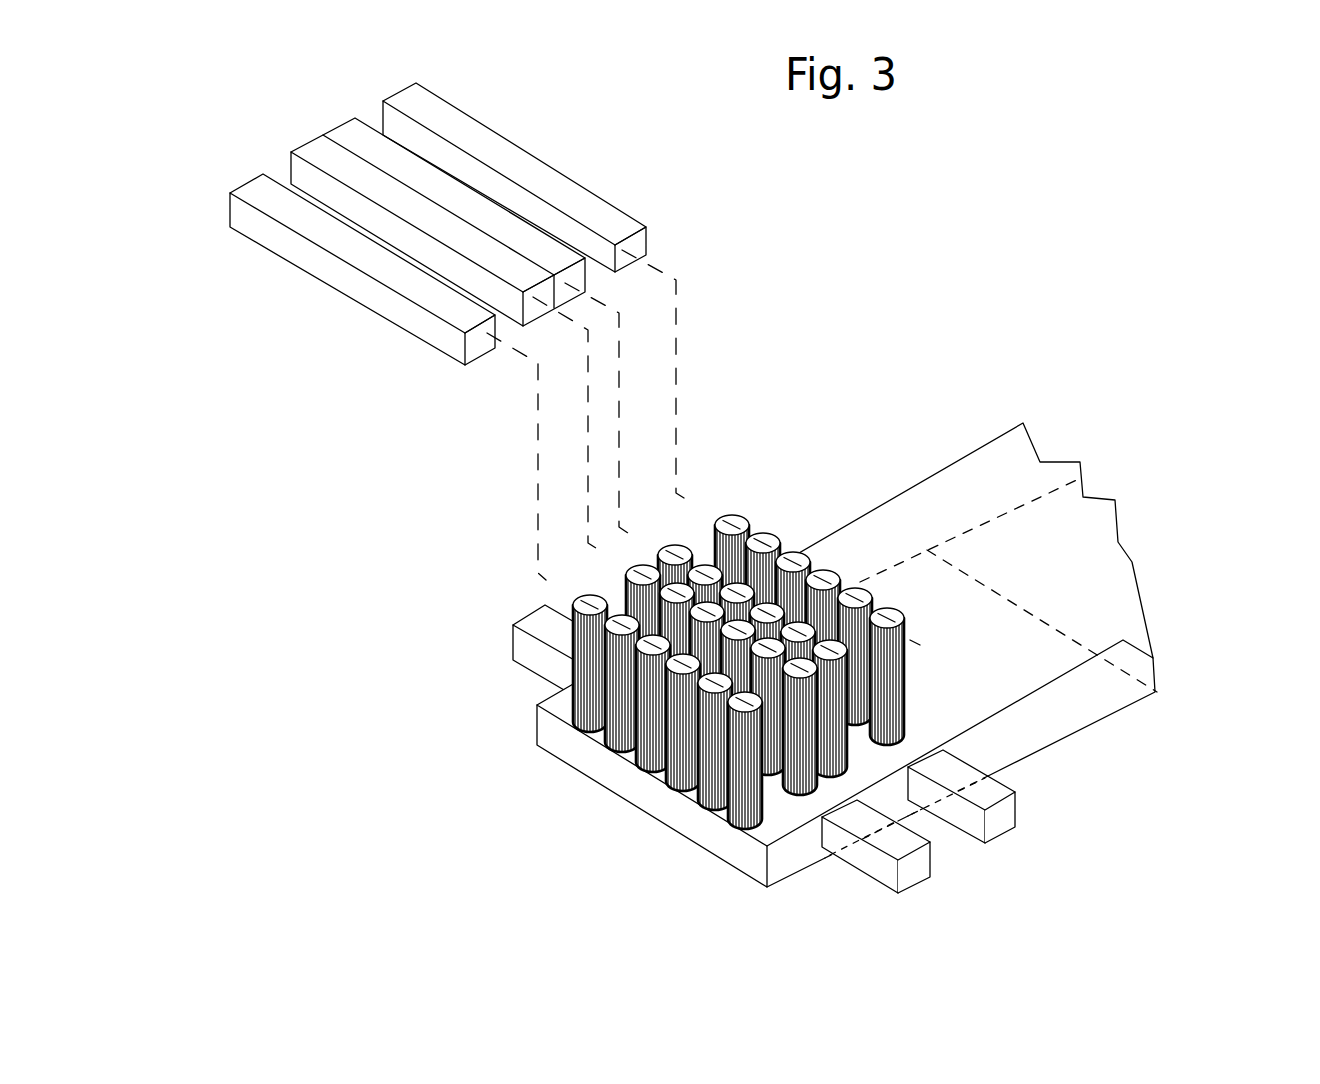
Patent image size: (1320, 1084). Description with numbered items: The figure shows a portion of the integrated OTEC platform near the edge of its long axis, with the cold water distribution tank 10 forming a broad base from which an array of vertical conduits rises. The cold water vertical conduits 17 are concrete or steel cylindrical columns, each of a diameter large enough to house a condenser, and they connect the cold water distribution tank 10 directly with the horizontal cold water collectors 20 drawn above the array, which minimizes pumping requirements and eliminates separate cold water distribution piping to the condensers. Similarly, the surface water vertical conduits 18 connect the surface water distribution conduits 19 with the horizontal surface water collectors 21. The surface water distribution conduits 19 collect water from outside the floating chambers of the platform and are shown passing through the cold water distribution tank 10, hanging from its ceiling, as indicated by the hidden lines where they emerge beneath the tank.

The cold water distribution tank 10 is at (1063, 557).
The cold water vertical conduits 17 is at (572, 727).
The surface water vertical conduits 18 is at (800, 777).
The surface water distribution conduits 19 is at (1003, 817).
The horizontal cold water collectors 20 is at (302, 250).
The horizontal surface water collectors 21 is at (512, 303).